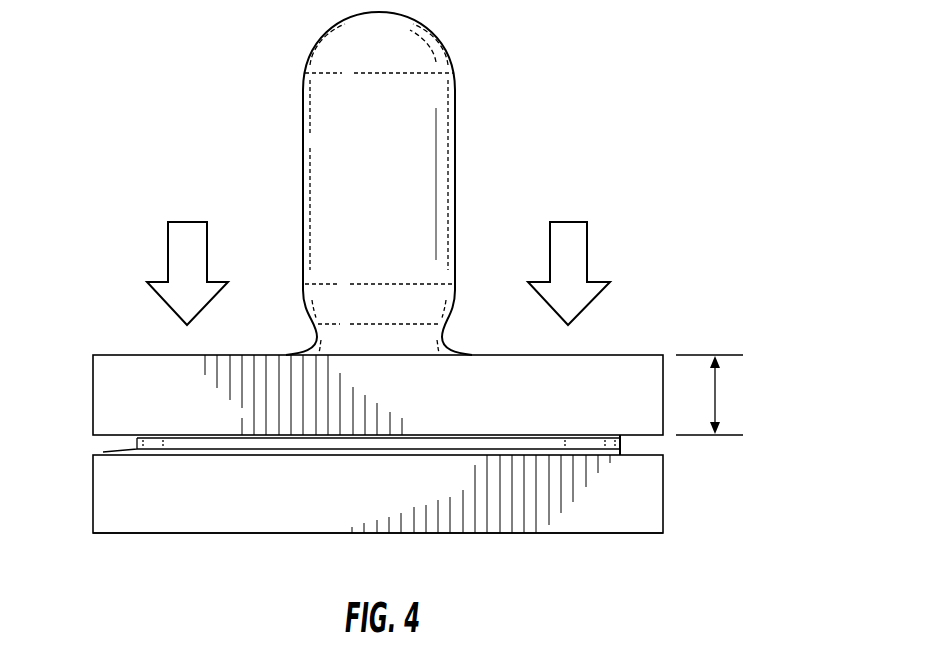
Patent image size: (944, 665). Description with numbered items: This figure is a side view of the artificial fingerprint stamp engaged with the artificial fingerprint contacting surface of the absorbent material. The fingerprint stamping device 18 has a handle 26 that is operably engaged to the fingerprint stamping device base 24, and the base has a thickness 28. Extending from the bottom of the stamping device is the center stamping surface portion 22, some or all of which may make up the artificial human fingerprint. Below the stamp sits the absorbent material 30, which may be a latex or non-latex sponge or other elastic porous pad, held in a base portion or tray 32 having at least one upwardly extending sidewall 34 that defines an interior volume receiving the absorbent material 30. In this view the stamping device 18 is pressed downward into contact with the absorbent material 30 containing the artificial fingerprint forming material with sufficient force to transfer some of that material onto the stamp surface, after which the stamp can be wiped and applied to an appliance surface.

The fingerprint stamping device 18 is at (463, 160).
The handle 26 is at (394, 176).
The fingerprint stamping device base 24 is at (488, 410).
The center stamping surface portion 22 is at (137, 443).
The upwardly extending sidewall 34 is at (333, 505).
The base portion or tray 32 is at (636, 502).
The absorbent material 30 is at (650, 448).
The thickness 28 is at (718, 407).